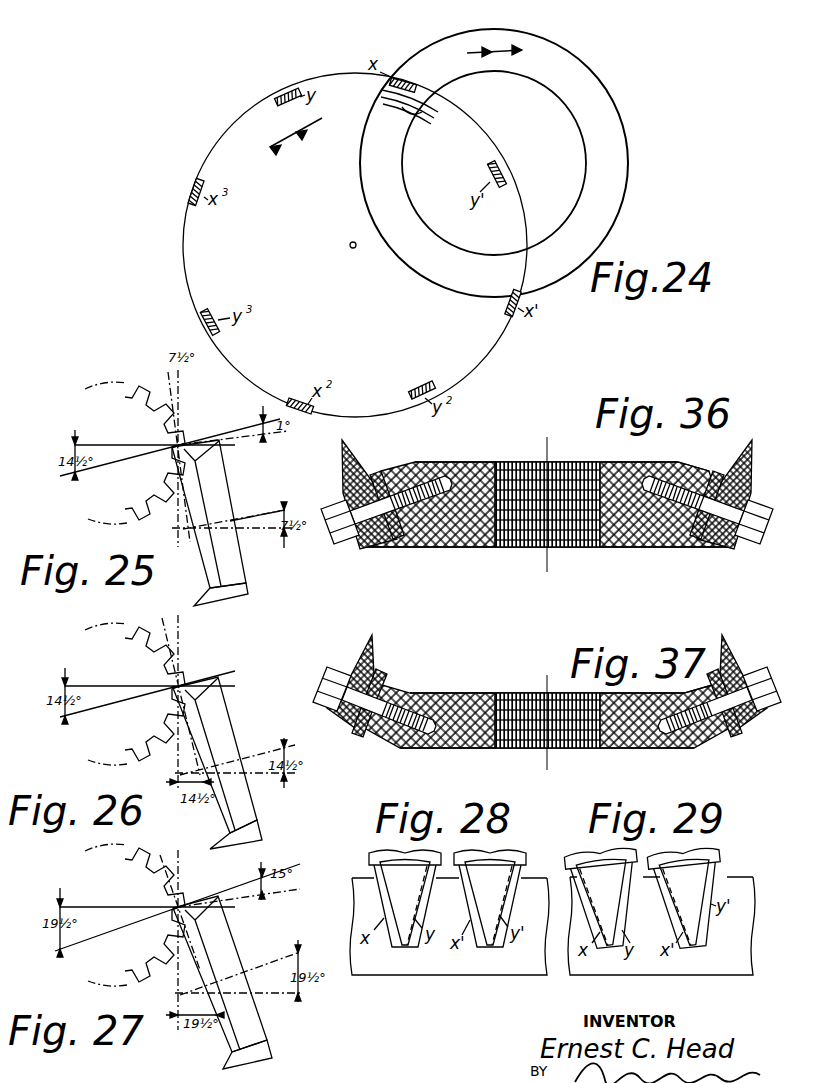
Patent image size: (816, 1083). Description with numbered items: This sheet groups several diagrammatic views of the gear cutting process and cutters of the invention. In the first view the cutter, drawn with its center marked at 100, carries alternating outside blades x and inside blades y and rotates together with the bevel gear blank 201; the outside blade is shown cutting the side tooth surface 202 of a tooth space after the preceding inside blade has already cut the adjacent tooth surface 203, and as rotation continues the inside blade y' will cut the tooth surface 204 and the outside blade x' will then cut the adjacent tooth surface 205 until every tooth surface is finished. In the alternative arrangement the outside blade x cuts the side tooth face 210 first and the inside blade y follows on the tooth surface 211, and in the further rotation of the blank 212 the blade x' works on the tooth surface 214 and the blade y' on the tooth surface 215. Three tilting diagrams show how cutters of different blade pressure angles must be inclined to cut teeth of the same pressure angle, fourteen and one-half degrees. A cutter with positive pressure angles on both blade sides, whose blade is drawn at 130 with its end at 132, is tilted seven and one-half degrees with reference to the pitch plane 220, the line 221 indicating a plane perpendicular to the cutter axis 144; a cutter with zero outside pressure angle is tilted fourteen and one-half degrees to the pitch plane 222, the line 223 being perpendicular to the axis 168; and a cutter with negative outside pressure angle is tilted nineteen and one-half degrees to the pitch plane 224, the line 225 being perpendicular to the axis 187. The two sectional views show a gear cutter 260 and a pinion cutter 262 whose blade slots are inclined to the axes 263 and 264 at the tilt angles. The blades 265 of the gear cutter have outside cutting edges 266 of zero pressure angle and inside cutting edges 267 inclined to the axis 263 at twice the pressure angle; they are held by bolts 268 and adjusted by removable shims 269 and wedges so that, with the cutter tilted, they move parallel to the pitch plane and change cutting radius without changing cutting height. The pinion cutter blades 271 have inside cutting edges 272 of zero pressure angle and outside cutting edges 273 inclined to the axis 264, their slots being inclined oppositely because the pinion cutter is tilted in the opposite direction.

In FIG. 24, the center of cutter 100 is at (355, 249).
In FIG. 24, the bevel gear blank 201 is at (628, 162).
In FIG. 28, the bevel gear blank 201 is at (424, 968).
In FIG. 24, the side tooth surface 202 is at (425, 83).
In FIG. 28, the side tooth surface 202 is at (375, 895).
In FIG. 24, the adjacent tooth surface 203 is at (430, 97).
In FIG. 28, the adjacent tooth surface 203 is at (424, 888).
In FIG. 24, the tooth surface 204 is at (412, 125).
In FIG. 28, the tooth surface 204 is at (503, 882).
In FIG. 24, the adjacent tooth surface 205 is at (426, 110).
In FIG. 28, the adjacent tooth surface 205 is at (422, 912).
In FIG. 25, the pitch plane 220 is at (178, 385).
In FIG. 25, the line indicating plane perpendicular to cutter axis 221 is at (206, 500).
In FIG. 25, the axis of the cutter 144 is at (256, 522).
In FIG. 25, the blade 130 is at (234, 566).
In FIG. 25, the blade tip 132 is at (236, 602).
In FIG. 26, the pitch plane 222 is at (186, 748).
In FIG. 26, the line indicating plane perpendicular to cutter axis 223 is at (200, 752).
In FIG. 26, the axis of the cutter 168 is at (256, 752).
In FIG. 27, the pitch plane 224 is at (183, 968).
In FIG. 27, the line indicating plane perpendicular to cutter axis 225 is at (200, 966).
In FIG. 27, the axis of the cutter 187 is at (272, 963).
In FIG. 36, the gear cutter 260 is at (652, 545).
In FIG. 36, the axis of the gear cutter 263 is at (552, 460).
In FIG. 36, the side tooth face 210 is at (706, 473).
In FIG. 29, the side tooth face 210 is at (590, 905).
In FIG. 36, the outside cutting edges 266 is at (342, 458).
In FIG. 36, the inside cutting edges 267 is at (352, 446).
In FIG. 36, the bolts 268 is at (348, 548).
In FIG. 36, the removable shims 269 is at (716, 478).
In FIG. 36, the blades of the gear cutter 265 is at (745, 486).
In FIG. 37, the pinion cutter 262 is at (478, 750).
In FIG. 37, the axis of the pinion cutter 264 is at (540, 690).
In FIG. 37, the inside cutting edges 272 is at (712, 676).
In FIG. 37, the blades of the pinion cutter 271 is at (372, 660).
In FIG. 37, the outside cutting edges 273 is at (738, 662).
In FIG. 29, the tooth surface 211 is at (632, 912).
In FIG. 29, the blank 212 is at (718, 968).
In FIG. 29, the tooth surface 214 is at (660, 932).
In FIG. 29, the tooth surface 215 is at (704, 930).